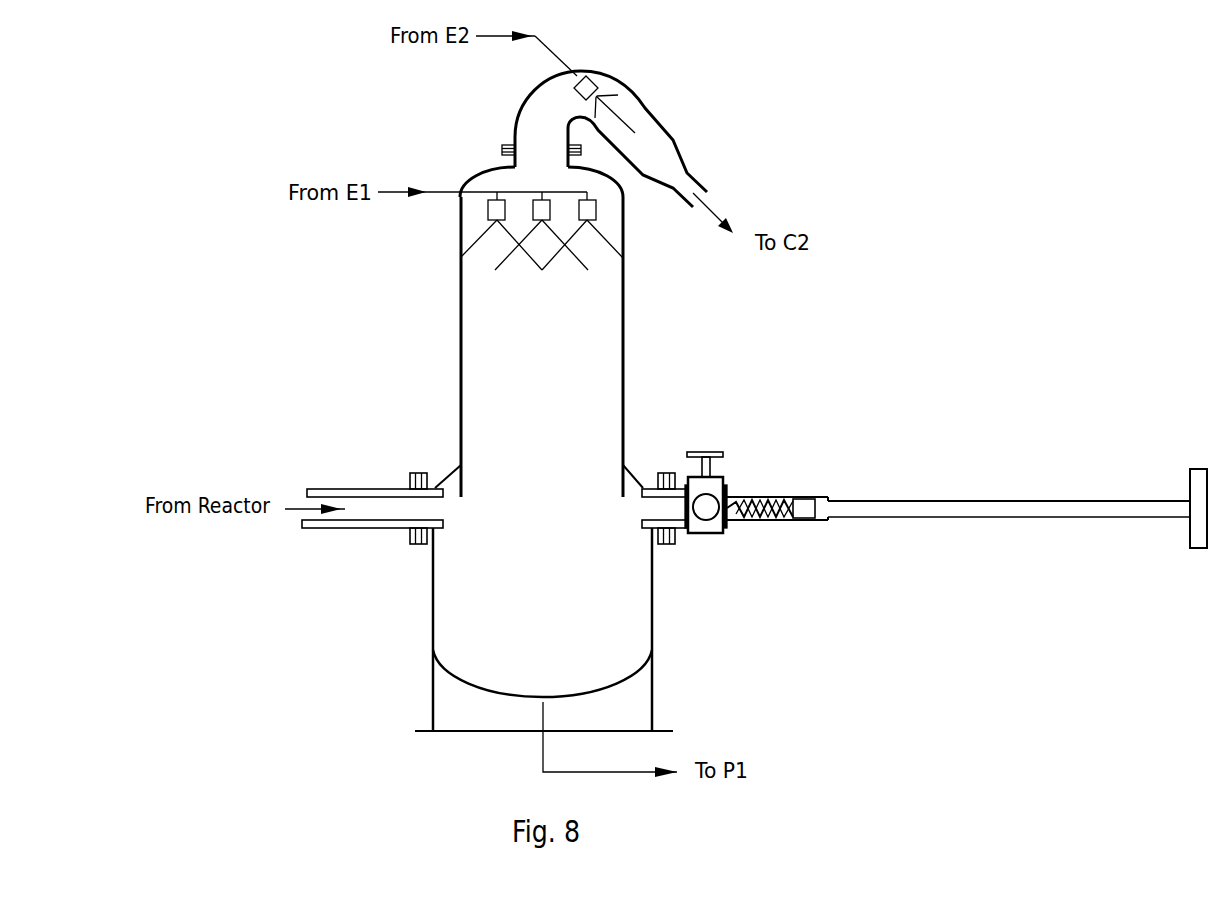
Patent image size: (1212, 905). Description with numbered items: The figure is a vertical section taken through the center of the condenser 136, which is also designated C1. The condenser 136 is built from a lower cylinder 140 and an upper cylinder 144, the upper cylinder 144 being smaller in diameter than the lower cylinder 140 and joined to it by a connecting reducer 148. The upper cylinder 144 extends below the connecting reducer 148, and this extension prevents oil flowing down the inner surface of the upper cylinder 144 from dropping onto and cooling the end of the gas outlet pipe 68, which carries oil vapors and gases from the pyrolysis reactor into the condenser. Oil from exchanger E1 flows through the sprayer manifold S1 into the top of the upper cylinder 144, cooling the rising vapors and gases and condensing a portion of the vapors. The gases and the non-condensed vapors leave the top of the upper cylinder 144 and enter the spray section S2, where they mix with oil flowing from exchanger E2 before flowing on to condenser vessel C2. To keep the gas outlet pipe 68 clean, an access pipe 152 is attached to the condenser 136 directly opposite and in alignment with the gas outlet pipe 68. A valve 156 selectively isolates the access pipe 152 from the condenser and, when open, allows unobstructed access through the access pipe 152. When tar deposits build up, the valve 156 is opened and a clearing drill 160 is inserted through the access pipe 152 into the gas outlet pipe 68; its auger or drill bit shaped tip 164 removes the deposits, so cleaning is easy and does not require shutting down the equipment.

The gas outlet pipe 68 is at (353, 513).
The condenser 136 is at (482, 373).
The lower cylinder 140 is at (433, 613).
The upper cylinder 144 is at (627, 392).
The connecting reducer 148 is at (640, 472).
The access pipe 152 is at (772, 495).
The valve 156 is at (715, 482).
The clearing drill 160 is at (1022, 500).
The auger or drill bit shaped tip 164 is at (777, 507).
The sprayer manifold S1 is at (533, 197).
The spray section S2 is at (593, 77).
The condenser C1 is at (592, 373).